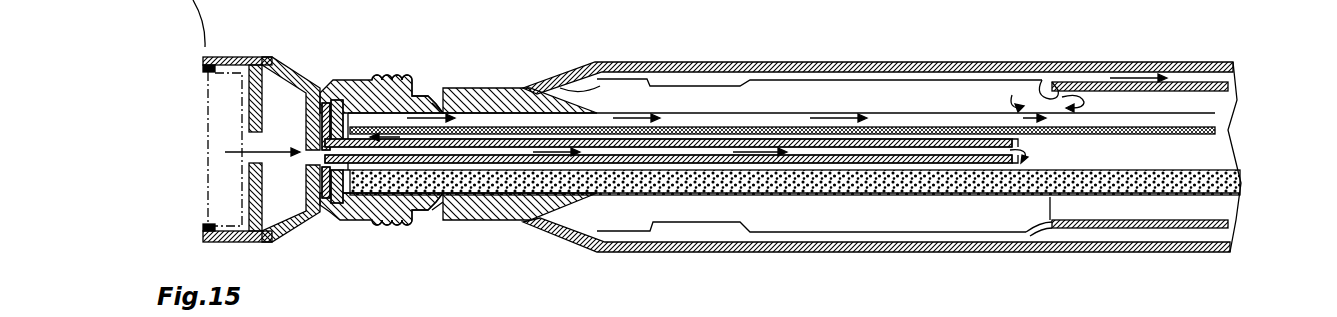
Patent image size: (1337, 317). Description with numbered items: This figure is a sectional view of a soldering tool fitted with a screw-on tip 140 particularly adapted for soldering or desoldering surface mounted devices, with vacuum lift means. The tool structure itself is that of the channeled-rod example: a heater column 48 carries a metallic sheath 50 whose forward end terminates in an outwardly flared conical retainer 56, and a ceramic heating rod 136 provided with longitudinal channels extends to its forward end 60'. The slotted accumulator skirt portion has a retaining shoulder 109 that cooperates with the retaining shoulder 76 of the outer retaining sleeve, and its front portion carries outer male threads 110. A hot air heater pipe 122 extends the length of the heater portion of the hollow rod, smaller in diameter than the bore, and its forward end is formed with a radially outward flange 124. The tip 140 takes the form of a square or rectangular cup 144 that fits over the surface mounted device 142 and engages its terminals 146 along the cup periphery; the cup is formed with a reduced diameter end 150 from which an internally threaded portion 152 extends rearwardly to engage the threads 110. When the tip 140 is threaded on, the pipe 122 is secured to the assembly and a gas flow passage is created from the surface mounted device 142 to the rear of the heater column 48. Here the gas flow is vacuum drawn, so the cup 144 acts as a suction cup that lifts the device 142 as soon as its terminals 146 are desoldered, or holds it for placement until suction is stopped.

The heater column 48 is at (1252, 181).
The metallic sheath 50 is at (1227, 104).
The conical retainer 56 is at (1050, 82).
The forward end of the rod 60' is at (374, 177).
The retaining shoulder 76 is at (540, 84).
The retaining shoulder 109 is at (598, 88).
The male threads 110 is at (433, 91).
The hot air heater pipe 122 is at (1024, 157).
The flange 124 is at (308, 212).
The ceramic heating rod 136 is at (1084, 138).
The tip 140 is at (288, 56).
The surface mounted device 142 is at (200, 167).
The cup 144 is at (256, 63).
The terminals 146 is at (204, 66).
The reduced diameter end 150 is at (342, 76).
The internally threaded portion 152 is at (393, 81).